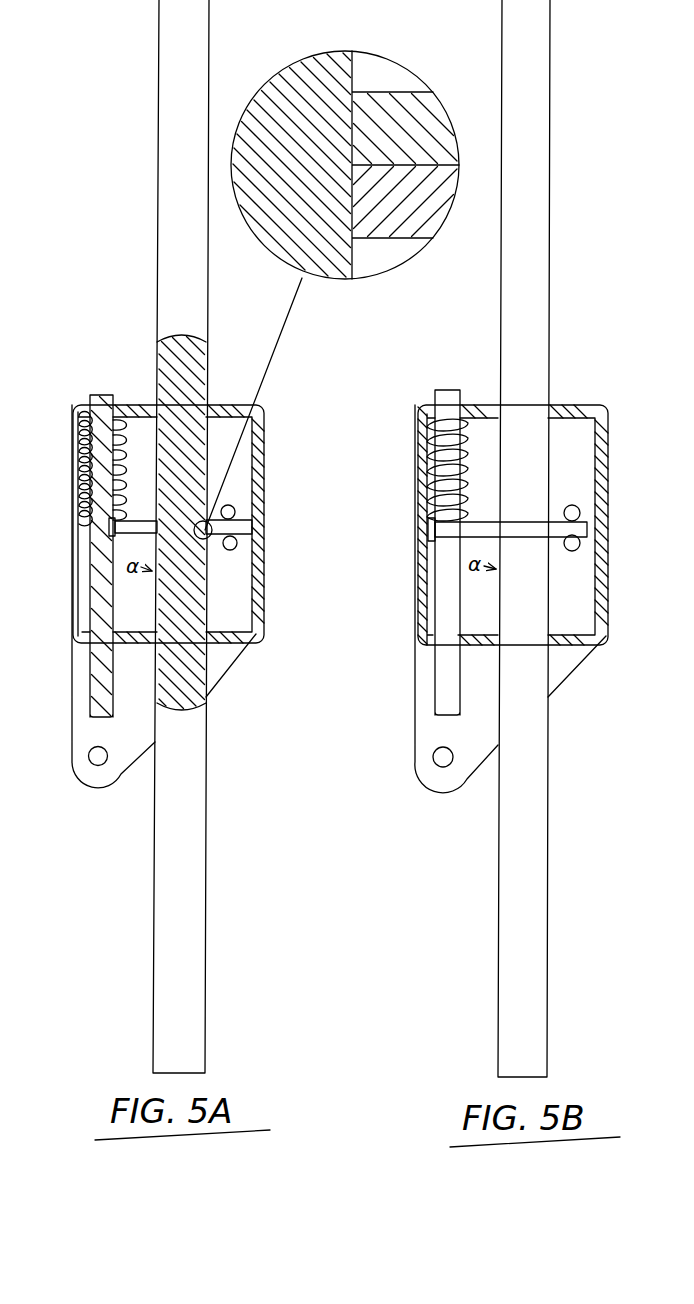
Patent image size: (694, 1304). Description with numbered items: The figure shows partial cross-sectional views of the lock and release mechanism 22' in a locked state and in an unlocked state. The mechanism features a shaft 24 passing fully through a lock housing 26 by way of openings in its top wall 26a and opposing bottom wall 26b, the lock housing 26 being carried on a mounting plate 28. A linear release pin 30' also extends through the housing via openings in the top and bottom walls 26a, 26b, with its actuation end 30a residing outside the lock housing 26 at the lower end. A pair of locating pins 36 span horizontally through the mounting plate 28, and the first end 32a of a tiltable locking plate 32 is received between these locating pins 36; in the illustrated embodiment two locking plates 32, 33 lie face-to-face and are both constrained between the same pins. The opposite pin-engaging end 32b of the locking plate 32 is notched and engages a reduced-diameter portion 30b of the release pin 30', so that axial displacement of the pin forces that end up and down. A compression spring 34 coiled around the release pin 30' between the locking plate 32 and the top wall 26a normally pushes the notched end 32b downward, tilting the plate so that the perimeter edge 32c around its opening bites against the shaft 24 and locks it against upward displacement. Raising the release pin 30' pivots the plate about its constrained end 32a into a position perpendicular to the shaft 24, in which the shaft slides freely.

In FIG. 5A, the lock and release mechanism 22' is at (77, 342).
In FIG. 5A, the shaft 24 is at (323, 62).
In FIG. 5B, the shaft 24 is at (524, 538).
In FIG. 5A, the lock housing 26 is at (250, 451).
In FIG. 5B, the lock housing 26 is at (590, 434).
In FIG. 5A, the top wall 26a is at (218, 417).
In FIG. 5B, the top wall 26a is at (560, 417).
In FIG. 5A, the bottom wall 26b is at (247, 640).
In FIG. 5B, the bottom wall 26b is at (577, 642).
In FIG. 5A, the mounting plate 28 is at (125, 762).
In FIG. 5B, the mounting plate 28 is at (467, 760).
In FIG. 5A, the release pin 30' is at (64, 560).
In FIG. 5B, the release pin 30' is at (414, 552).
In FIG. 5A, the actuation end 30a is at (92, 720).
In FIG. 5B, the actuation end 30a is at (437, 717).
In FIG. 5A, the reduced-diameter portion 30b is at (98, 532).
In FIG. 5B, the reduced-diameter portion 30b is at (428, 522).
In FIG. 5A, the locking plate 32 is at (420, 222).
In FIG. 5B, the locking plate 32 is at (530, 524).
In FIG. 5A, the first end 32a is at (265, 530).
In FIG. 5B, the first end 32a is at (608, 530).
In FIG. 5A, the pin-engaging end 32b is at (90, 535).
In FIG. 5B, the pin-engaging end 32b is at (430, 540).
In FIG. 5A, the perimeter edge 32c is at (348, 173).
In FIG. 5A, the locking plate 33 is at (400, 100).
In FIG. 5B, the locking plate 33 is at (553, 522).
In FIG. 5A, the spring 34 is at (118, 423).
In FIG. 5B, the spring 34 is at (448, 425).
In FIG. 5A, the locating pins 36 is at (238, 538).
In FIG. 5B, the locating pins 36 is at (580, 540).